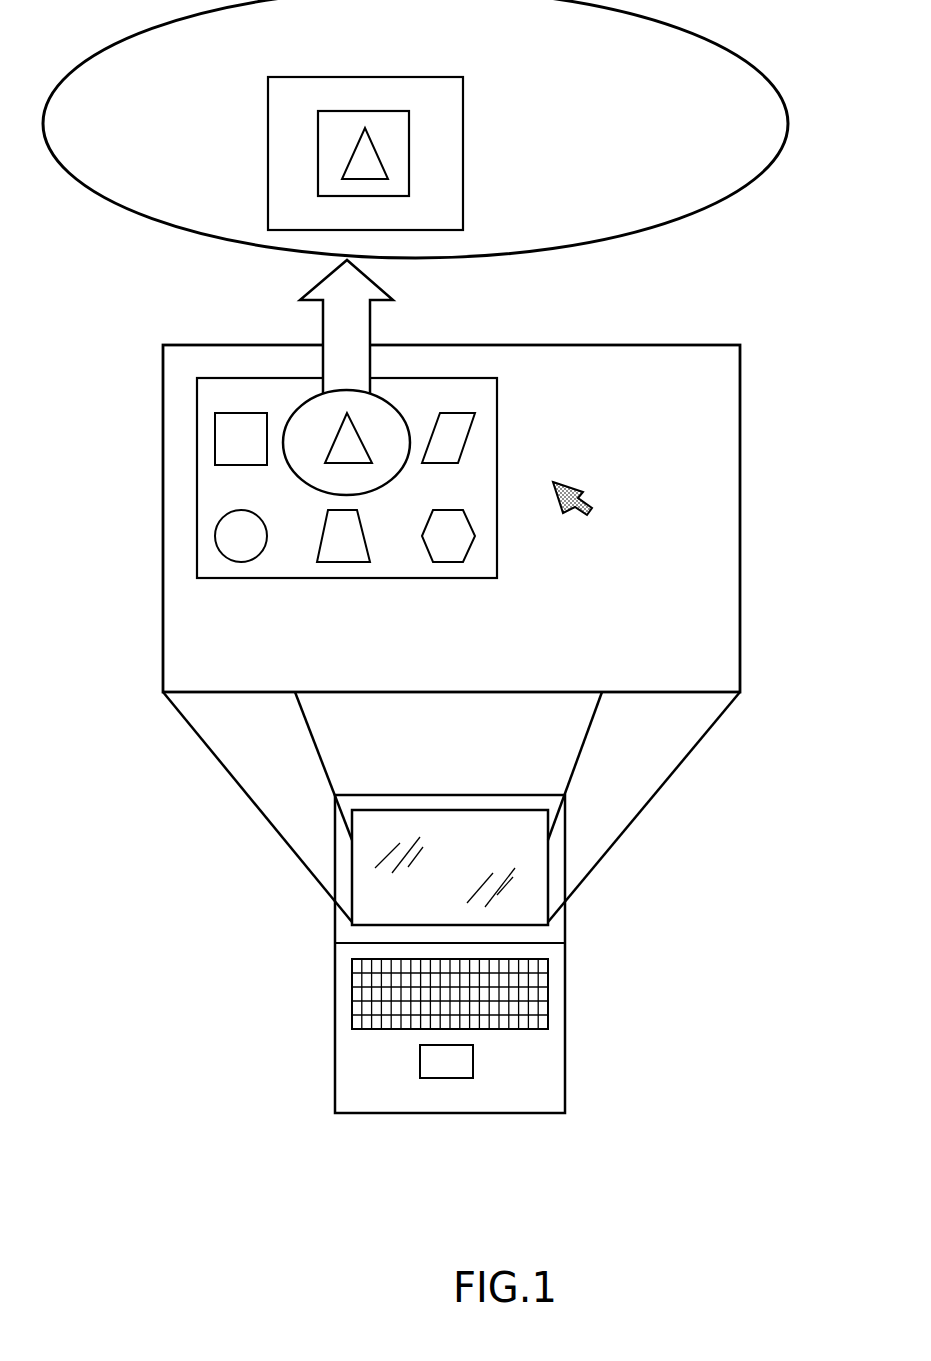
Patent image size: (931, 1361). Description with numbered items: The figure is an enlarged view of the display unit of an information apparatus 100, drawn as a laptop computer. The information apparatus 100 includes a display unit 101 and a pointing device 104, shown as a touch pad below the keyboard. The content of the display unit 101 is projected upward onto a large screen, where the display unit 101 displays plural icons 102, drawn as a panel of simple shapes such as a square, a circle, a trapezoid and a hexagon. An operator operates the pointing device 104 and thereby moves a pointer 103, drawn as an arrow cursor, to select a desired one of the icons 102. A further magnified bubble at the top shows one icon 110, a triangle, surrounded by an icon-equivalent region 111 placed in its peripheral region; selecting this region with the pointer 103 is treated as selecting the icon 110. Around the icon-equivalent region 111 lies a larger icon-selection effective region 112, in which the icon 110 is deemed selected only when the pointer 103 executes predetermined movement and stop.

The information apparatus 100 is at (502, 962).
The display unit 101 is at (440, 840).
The icons 102 is at (497, 430).
The pointer 103 is at (590, 516).
The pointing device 104 is at (455, 1078).
The icon 110 is at (350, 163).
The icon-equivalent region 111 is at (410, 125).
The icon-selection effective region 112 is at (463, 190).